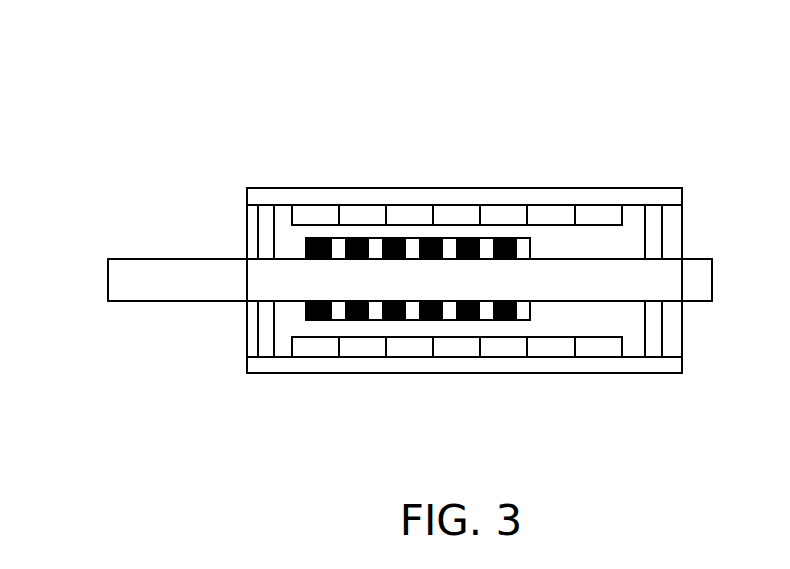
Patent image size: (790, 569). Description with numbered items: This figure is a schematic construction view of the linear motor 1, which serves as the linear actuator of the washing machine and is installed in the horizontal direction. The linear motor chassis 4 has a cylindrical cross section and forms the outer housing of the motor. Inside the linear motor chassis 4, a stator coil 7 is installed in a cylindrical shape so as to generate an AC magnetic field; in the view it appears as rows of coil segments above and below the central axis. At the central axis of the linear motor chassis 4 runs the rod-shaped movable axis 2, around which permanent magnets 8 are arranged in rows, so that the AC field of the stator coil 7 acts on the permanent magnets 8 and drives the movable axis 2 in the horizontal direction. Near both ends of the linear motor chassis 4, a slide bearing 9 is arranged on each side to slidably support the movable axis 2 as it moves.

The linear motor 1 is at (420, 124).
The movable axis 2 is at (150, 259).
The linear motor chassis 4 is at (604, 187).
The stator coil 7 is at (505, 357).
The permanent magnets 8 is at (428, 320).
The slide bearing 9 is at (252, 326).